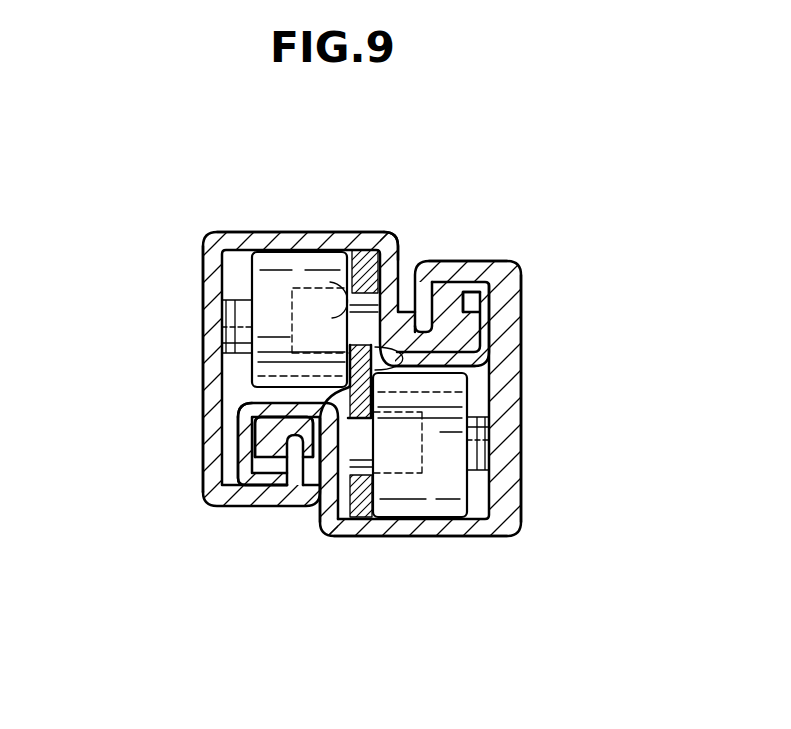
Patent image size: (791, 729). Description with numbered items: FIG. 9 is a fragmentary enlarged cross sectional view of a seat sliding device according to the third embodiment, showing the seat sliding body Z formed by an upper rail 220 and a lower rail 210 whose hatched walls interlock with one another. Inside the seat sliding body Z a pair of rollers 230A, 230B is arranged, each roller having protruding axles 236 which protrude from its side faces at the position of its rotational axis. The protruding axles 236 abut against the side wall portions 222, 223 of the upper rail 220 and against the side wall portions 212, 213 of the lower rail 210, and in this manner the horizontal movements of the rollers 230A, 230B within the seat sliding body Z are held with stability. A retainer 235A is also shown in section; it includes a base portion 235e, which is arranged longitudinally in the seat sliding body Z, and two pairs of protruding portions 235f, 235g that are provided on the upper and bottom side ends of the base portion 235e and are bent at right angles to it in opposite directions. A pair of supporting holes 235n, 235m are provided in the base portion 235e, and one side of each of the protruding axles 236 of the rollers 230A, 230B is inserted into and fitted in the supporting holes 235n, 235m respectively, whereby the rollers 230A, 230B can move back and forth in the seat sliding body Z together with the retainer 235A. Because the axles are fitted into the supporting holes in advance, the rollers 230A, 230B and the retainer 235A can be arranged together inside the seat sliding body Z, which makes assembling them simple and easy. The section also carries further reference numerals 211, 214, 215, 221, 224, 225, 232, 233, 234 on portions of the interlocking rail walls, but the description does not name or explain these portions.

The lower rail 210 is at (443, 540).
The bottom wall of second housing member 211 is at (486, 540).
The side wall portion 212 is at (517, 388).
The side wall portion 213 is at (317, 507).
The top wall of second housing member 214 is at (490, 273).
The engaging hook 215 is at (245, 436).
The upper rail 220 is at (378, 226).
The top wall of first housing member 221 is at (286, 236).
The side wall portion 222 is at (405, 262).
The side wall portion 223 is at (202, 368).
The engaging projection 224 is at (482, 300).
The engaging block 225 is at (268, 484).
The roller 230A is at (422, 477).
The roller 230B is at (255, 273).
The engaging portion 232 is at (455, 320).
The intermediate wall 233 is at (486, 350).
The engaging portion 234 is at (228, 413).
The retainer 235A is at (336, 528).
The base portion 235e is at (352, 383).
The protruding portion 235f is at (297, 290).
The protruding portion 235g is at (503, 522).
The supporting hole 235m is at (387, 493).
The supporting hole 235n is at (330, 282).
The protruding axle 236 is at (225, 337).
The seat sliding body Z is at (512, 226).